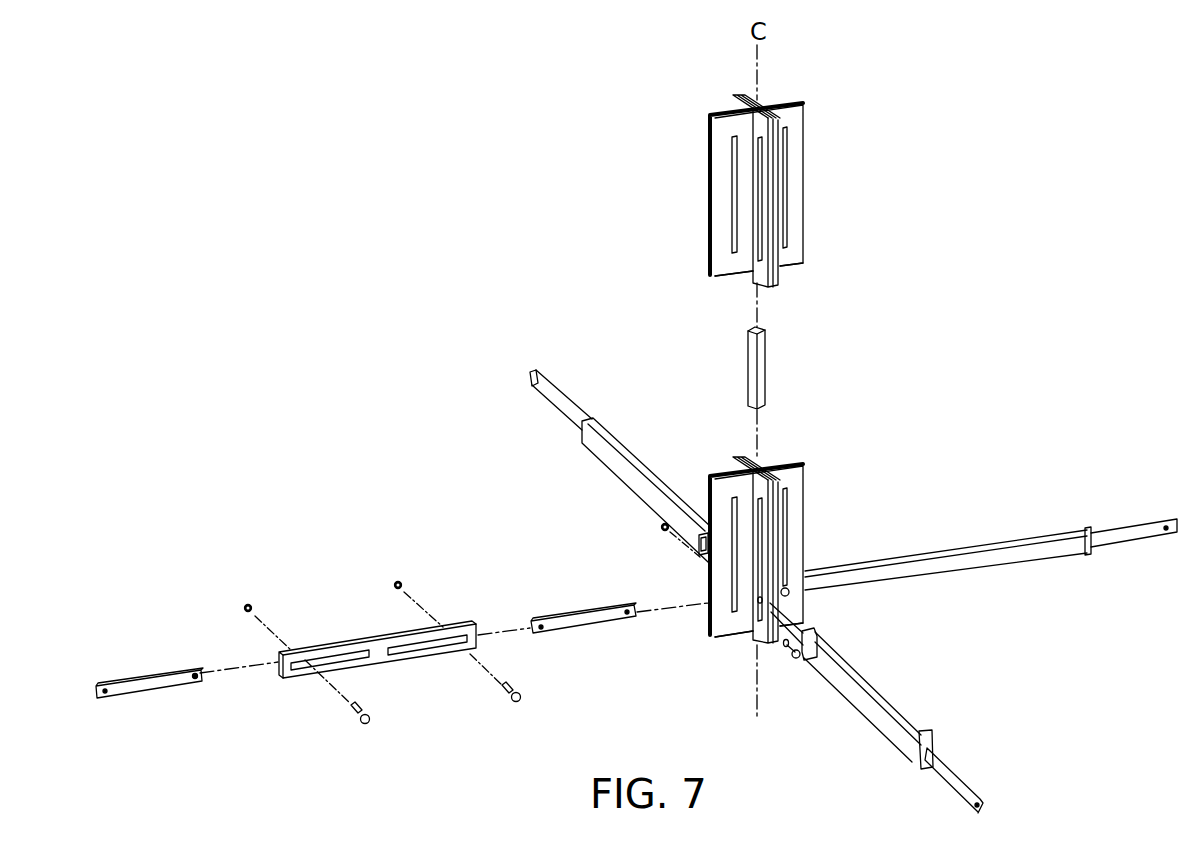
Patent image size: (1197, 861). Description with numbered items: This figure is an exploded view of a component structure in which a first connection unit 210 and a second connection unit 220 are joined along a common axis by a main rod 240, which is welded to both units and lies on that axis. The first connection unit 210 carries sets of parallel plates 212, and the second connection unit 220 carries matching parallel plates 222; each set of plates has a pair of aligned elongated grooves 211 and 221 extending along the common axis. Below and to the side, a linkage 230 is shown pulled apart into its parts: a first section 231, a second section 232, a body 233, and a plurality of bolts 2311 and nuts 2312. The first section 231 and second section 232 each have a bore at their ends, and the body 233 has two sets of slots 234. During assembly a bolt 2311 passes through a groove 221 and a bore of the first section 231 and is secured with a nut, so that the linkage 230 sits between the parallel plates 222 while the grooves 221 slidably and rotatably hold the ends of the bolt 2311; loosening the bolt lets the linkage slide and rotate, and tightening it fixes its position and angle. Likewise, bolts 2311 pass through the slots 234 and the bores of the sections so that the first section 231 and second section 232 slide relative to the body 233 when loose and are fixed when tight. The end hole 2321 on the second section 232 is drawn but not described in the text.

The first connection unit 210 is at (804, 176).
The elongated grooves 211 is at (733, 152).
The parallel plates 212 is at (787, 102).
The second connection unit 220 is at (804, 496).
The elongated grooves 221 is at (733, 513).
The parallel plates 222 is at (787, 464).
The main rod 240 is at (768, 362).
The linkage 230 is at (592, 466).
The first section 231 is at (574, 614).
The bolts 2311 is at (364, 727).
The second section 232 is at (152, 677).
The pivot hole 2321 is at (201, 677).
The nuts 2312 is at (248, 604).
The body 233 is at (354, 644).
The slots 234 is at (400, 650).